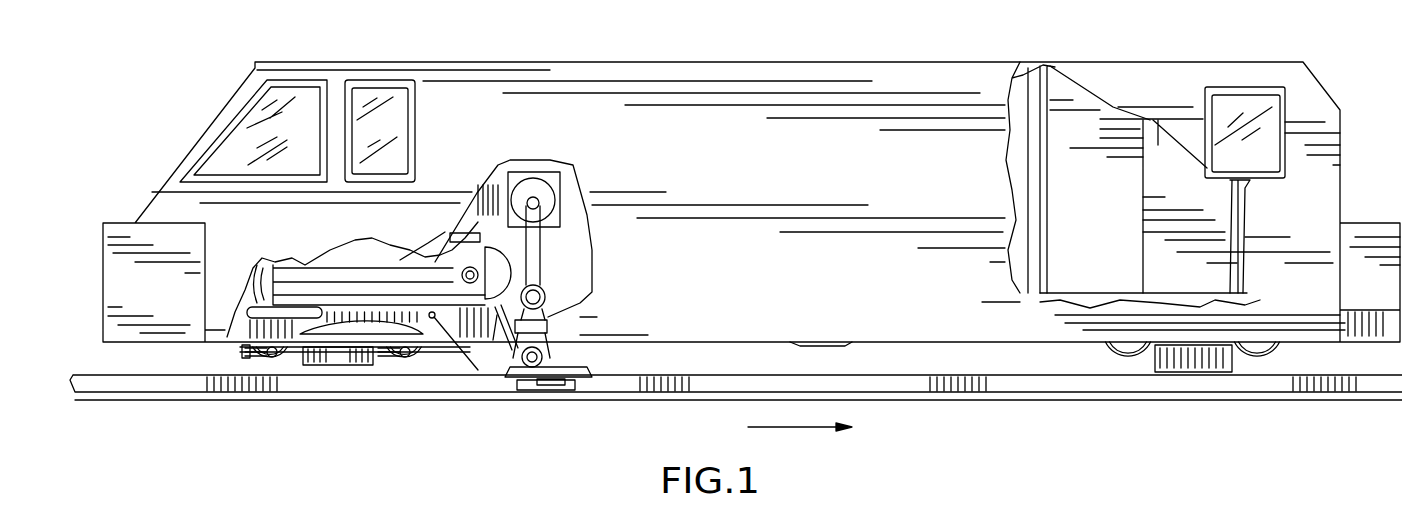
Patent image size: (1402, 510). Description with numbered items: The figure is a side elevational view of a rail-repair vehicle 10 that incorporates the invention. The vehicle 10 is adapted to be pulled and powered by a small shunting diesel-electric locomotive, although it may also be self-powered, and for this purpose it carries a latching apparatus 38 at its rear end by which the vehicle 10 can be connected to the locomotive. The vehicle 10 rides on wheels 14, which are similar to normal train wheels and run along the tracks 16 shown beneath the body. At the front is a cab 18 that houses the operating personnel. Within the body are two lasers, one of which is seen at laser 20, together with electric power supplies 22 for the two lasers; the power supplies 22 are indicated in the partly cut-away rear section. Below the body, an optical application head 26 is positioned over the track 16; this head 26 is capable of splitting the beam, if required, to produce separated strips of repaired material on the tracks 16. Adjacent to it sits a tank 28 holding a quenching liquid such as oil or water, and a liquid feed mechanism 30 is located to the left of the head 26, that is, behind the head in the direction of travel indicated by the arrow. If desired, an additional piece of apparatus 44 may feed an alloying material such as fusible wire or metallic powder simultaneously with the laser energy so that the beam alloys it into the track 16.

The vehicle 10 is at (553, 58).
The wheels 14 is at (242, 360).
The tracks 16 is at (141, 387).
The cab 18 is at (305, 96).
The laser 20 is at (718, 72).
The electric power supplies 22 is at (1155, 105).
The optical application head 26 is at (597, 367).
The tank 28 is at (413, 218).
The liquid feed mechanism 30 is at (460, 343).
The latching apparatus 38 is at (1343, 320).
The additional piece of apparatus 44 is at (490, 396).